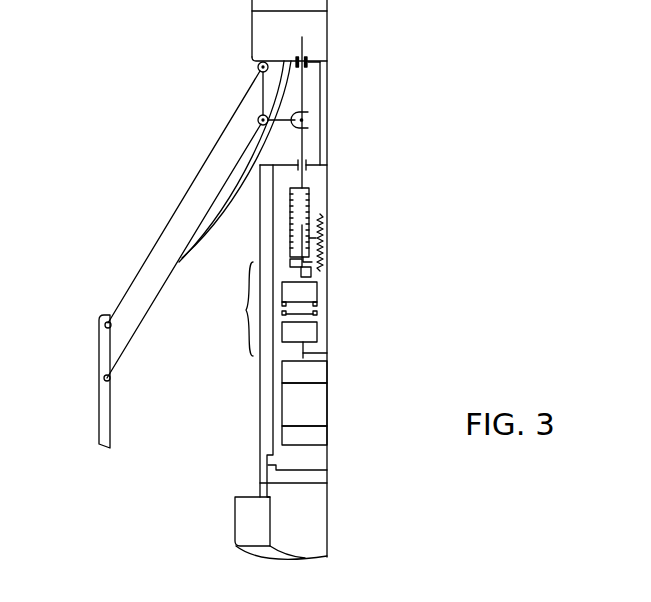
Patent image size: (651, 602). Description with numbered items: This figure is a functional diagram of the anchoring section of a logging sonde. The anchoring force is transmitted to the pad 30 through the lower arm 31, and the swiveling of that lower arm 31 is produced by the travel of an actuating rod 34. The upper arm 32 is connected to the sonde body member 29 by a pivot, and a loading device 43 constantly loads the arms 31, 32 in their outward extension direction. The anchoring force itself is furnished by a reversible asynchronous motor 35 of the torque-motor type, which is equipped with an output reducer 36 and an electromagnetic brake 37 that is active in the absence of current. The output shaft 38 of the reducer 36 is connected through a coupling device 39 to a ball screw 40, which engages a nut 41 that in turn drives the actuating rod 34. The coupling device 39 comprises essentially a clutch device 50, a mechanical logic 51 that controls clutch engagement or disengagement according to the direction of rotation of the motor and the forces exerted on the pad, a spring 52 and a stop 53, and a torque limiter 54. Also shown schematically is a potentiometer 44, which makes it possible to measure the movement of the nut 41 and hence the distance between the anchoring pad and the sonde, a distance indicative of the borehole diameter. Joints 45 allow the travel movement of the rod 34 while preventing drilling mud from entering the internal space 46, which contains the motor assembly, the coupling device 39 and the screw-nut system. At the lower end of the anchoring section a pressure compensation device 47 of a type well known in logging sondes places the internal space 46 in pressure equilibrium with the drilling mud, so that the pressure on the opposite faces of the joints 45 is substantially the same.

The sonde body member 29 is at (267, 32).
The pad 30 is at (100, 352).
The lower arm 31 is at (116, 354).
The upper arm 32 is at (146, 267).
The actuating rod 34 is at (311, 188).
The reversible asynchronous motor 35 is at (313, 439).
The output reducer 36 is at (309, 409).
The electromagnetic brake 37 is at (313, 462).
The output shaft 38 is at (310, 373).
The coupling device 39 is at (237, 309).
The ball screw 40 is at (297, 258).
The nut 41 is at (322, 218).
The loading device 43 is at (237, 182).
The potentiometer 44 is at (313, 235).
The joints 45 is at (320, 62).
The internal space 46 is at (309, 462).
The pressure compensation device 47 is at (247, 520).
The clutch device 50 is at (312, 332).
The mechanical logic 51 is at (323, 353).
The spring 52 is at (298, 273).
The stop 53 is at (318, 258).
The torque limiter 54 is at (310, 291).